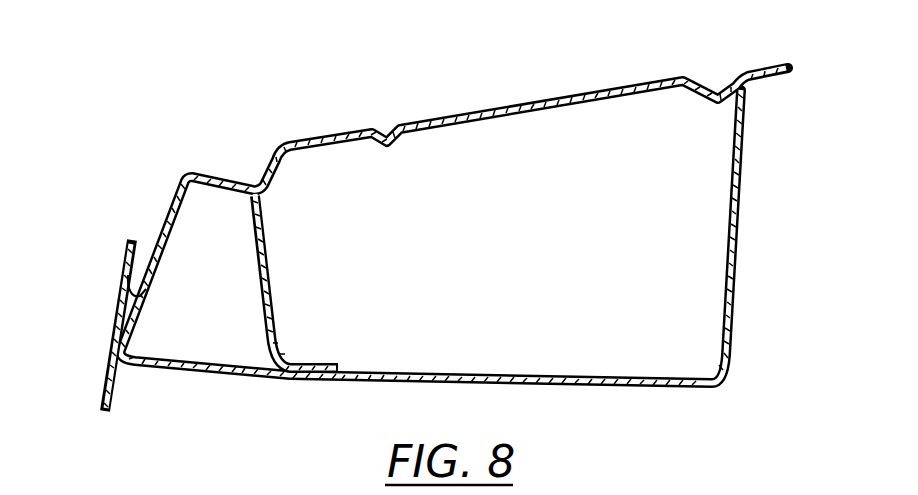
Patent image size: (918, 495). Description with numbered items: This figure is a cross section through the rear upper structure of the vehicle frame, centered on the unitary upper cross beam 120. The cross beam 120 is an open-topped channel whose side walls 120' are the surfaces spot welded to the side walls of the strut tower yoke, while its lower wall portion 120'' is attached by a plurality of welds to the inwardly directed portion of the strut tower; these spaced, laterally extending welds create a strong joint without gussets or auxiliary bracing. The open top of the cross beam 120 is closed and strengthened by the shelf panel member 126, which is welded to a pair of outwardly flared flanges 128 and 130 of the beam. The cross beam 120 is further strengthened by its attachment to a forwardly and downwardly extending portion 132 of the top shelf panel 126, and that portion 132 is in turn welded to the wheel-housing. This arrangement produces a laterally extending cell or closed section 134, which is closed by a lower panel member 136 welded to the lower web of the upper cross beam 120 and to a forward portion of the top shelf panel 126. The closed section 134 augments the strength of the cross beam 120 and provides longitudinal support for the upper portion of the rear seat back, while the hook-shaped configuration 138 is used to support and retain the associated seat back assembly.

The upper cross beam 120 is at (454, 261).
The side walls of the upper cross beam 120' is at (498, 232).
The lower wall portion of the cross beam 120'' is at (519, 353).
The shelf panel member 126 is at (497, 113).
The outwardly flared flange 128 is at (228, 196).
The outwardly flared flange 130 is at (767, 82).
The forwardly and downwardly extending portion 132 is at (167, 222).
The closed cell or section 134 is at (217, 331).
The lower panel member 136 is at (253, 378).
The hook-shaped configuration 138 is at (118, 283).